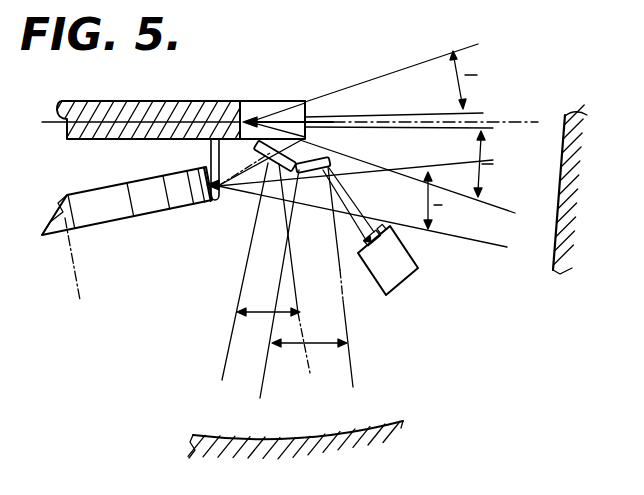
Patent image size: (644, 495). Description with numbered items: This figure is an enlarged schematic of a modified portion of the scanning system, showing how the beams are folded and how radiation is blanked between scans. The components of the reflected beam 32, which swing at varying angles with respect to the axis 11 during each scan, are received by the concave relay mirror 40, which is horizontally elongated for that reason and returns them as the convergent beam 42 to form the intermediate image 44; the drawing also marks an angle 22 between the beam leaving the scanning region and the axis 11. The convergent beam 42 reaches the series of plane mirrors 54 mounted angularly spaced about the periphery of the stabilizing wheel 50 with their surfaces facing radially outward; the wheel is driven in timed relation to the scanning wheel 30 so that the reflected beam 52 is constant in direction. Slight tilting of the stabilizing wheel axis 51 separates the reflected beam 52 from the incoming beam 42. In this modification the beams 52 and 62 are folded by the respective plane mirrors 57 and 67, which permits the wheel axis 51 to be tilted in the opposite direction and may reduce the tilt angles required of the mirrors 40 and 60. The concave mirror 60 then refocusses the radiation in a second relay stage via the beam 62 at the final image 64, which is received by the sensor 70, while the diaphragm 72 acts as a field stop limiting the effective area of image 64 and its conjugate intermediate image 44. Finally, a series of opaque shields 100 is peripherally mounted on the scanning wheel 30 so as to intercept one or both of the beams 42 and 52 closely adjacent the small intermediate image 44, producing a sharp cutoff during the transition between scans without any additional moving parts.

The axis 11 is at (112, 112).
The scanning wheel 30 is at (165, 98).
The beam angle 22 is at (483, 80).
The reflected beam 32 is at (499, 164).
The convergent beam 42 is at (448, 201).
The plane mirror 57 is at (292, 147).
The plane mirror 67 is at (325, 160).
The diaphragm 72 is at (372, 234).
The image 64 is at (382, 242).
The sensor 70 is at (405, 278).
The reflected beam 52 is at (264, 314).
The beam 62 is at (326, 345).
The opaque shields 100 is at (210, 151).
The intermediate image 44 is at (194, 212).
The stabilizing wheel 50 is at (147, 217).
The plane mirrors 54 is at (187, 169).
The stabilizing wheel axis 51 is at (78, 266).
The concave relay mirror 40 is at (557, 247).
The concave mirror 60 is at (394, 422).